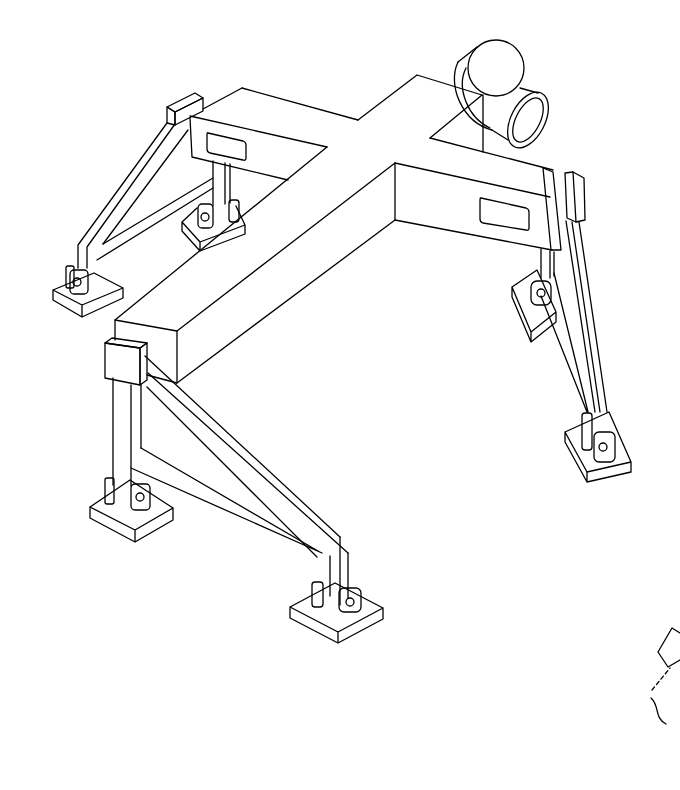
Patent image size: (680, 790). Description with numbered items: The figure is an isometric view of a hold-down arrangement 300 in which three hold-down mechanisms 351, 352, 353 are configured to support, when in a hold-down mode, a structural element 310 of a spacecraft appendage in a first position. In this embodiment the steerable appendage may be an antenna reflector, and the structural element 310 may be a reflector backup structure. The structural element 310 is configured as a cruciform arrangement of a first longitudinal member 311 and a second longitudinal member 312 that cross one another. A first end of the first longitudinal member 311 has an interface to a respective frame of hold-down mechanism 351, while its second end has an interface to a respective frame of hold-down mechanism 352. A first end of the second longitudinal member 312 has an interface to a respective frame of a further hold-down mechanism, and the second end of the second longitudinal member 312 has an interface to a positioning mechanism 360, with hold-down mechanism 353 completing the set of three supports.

The hold-down arrangement 300 is at (118, 96).
The structural element 310 is at (388, 266).
The first longitudinal member 311 is at (283, 118).
The second longitudinal member 312 is at (197, 303).
The hold-down mechanism 351 is at (600, 338).
The hold-down mechanism 352 is at (108, 212).
The hold-down mechanism 353 is at (238, 519).
The positioning mechanism 360 is at (513, 72).